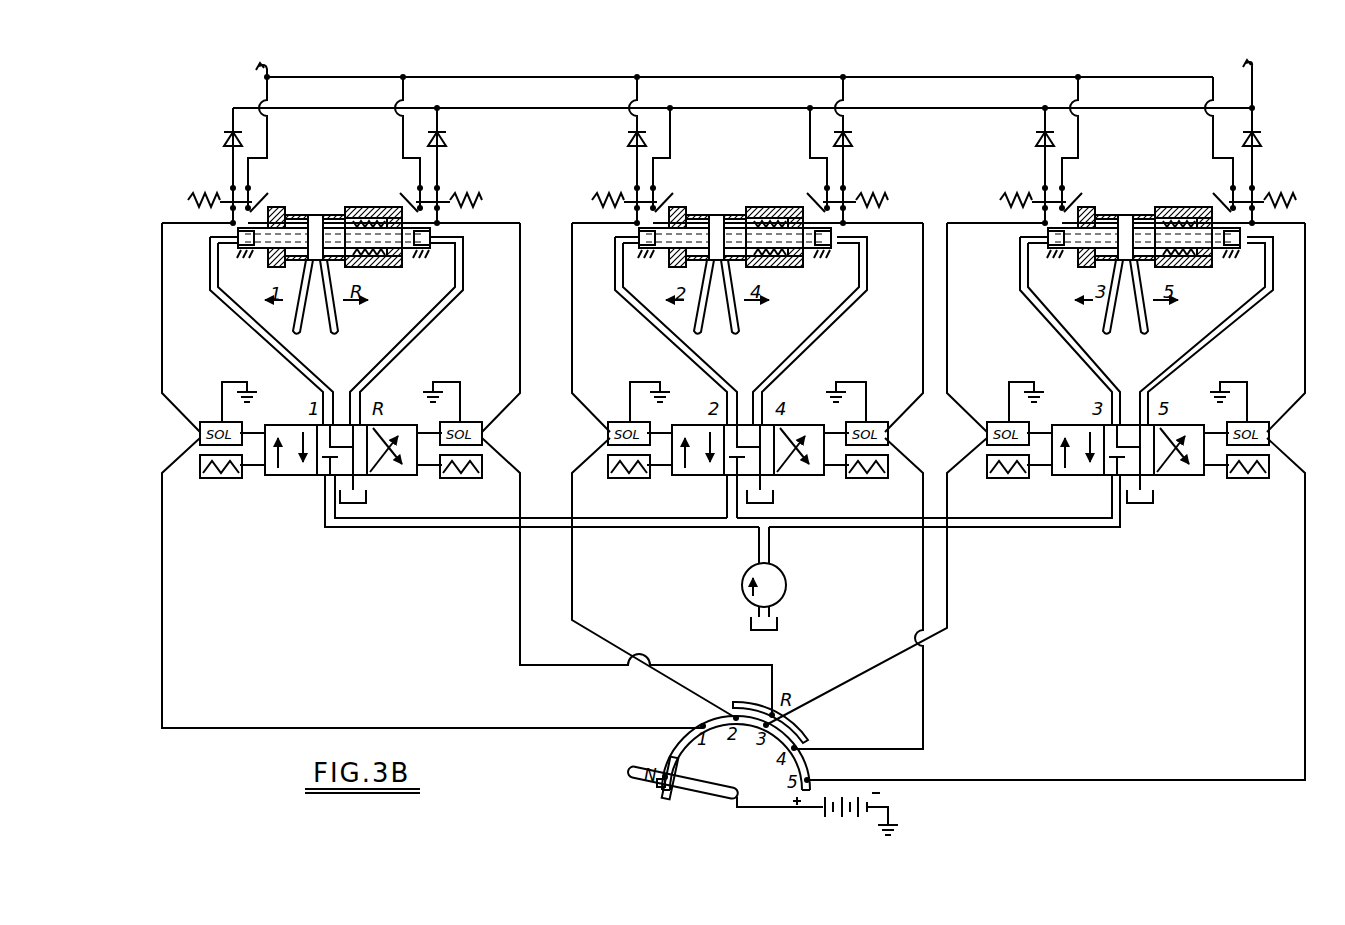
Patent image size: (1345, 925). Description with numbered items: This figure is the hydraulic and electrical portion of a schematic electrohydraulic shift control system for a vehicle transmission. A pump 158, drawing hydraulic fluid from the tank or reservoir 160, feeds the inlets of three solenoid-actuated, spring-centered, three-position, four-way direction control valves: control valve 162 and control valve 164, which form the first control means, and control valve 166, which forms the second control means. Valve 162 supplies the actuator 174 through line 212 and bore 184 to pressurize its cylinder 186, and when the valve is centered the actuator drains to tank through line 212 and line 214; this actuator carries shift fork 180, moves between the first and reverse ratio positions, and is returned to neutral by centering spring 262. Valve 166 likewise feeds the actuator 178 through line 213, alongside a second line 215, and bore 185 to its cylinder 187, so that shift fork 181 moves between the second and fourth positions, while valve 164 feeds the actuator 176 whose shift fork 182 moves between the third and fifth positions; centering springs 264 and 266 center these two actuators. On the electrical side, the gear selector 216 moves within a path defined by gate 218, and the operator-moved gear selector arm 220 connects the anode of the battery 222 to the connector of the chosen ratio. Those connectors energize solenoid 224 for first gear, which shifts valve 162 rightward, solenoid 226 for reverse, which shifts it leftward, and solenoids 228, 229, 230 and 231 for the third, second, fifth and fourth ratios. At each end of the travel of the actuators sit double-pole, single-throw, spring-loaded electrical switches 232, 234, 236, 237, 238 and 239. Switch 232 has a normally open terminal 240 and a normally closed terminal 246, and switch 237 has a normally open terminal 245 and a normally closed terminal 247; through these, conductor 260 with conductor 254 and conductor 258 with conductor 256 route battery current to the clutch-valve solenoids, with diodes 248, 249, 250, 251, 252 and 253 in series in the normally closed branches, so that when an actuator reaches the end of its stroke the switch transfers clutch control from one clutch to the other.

The pump 158 is at (787, 577).
The tank or reservoir 160 is at (348, 503).
The control valve 162 is at (390, 477).
The control valve 164 is at (1177, 477).
The control valve 166 is at (797, 478).
The actuator 174 is at (370, 207).
The actuator 176 is at (1185, 208).
The actuator 178 is at (784, 207).
The shift fork 180 is at (342, 320).
The shift fork 181 is at (742, 320).
The shift fork 182 is at (1142, 320).
The bore 184 is at (249, 247).
The bore 185 is at (652, 247).
The cylinder 186 is at (319, 215).
The cylinder 187 is at (722, 215).
The line 212 is at (275, 353).
The line 213 is at (650, 322).
The line 214 is at (415, 345).
The fluid conduit 215 is at (835, 320).
The gear selector 216 is at (772, 775).
The gate 218 is at (804, 736).
The gear selector arm 220 is at (626, 773).
The battery 222 is at (834, 826).
The solenoid 224 is at (212, 422).
The solenoid 226 is at (470, 420).
The solenoid 228 is at (992, 422).
The solenoid 229 is at (618, 422).
The solenoid 230 is at (1264, 422).
The solenoid 231 is at (874, 422).
The electrical switch 232 is at (208, 188).
The electrical switch 234 is at (450, 190).
The electrical switch 236 is at (1082, 190).
The electrical switch 237 is at (670, 174).
The electrical switch 238 is at (1270, 192).
The limit switch 239 is at (866, 191).
The normally open terminal 240 is at (258, 205).
The normally open terminal 245 is at (665, 204).
The normally closed terminal 246 is at (226, 211).
The normally closed terminal 247 is at (624, 210).
The diode 248 is at (224, 140).
The diode 249 is at (450, 140).
The diode 250 is at (628, 140).
The diode 251 is at (855, 140).
The diode 252 is at (1035, 140).
The diode 253 is at (1265, 140).
The conductor 254 is at (728, 109).
The conductor 256 is at (893, 78).
The conductor 258 is at (262, 88).
The conductor 260 is at (1256, 93).
The centering spring 262 is at (390, 268).
The centering spring 264 is at (792, 268).
The centering spring 266 is at (1198, 268).